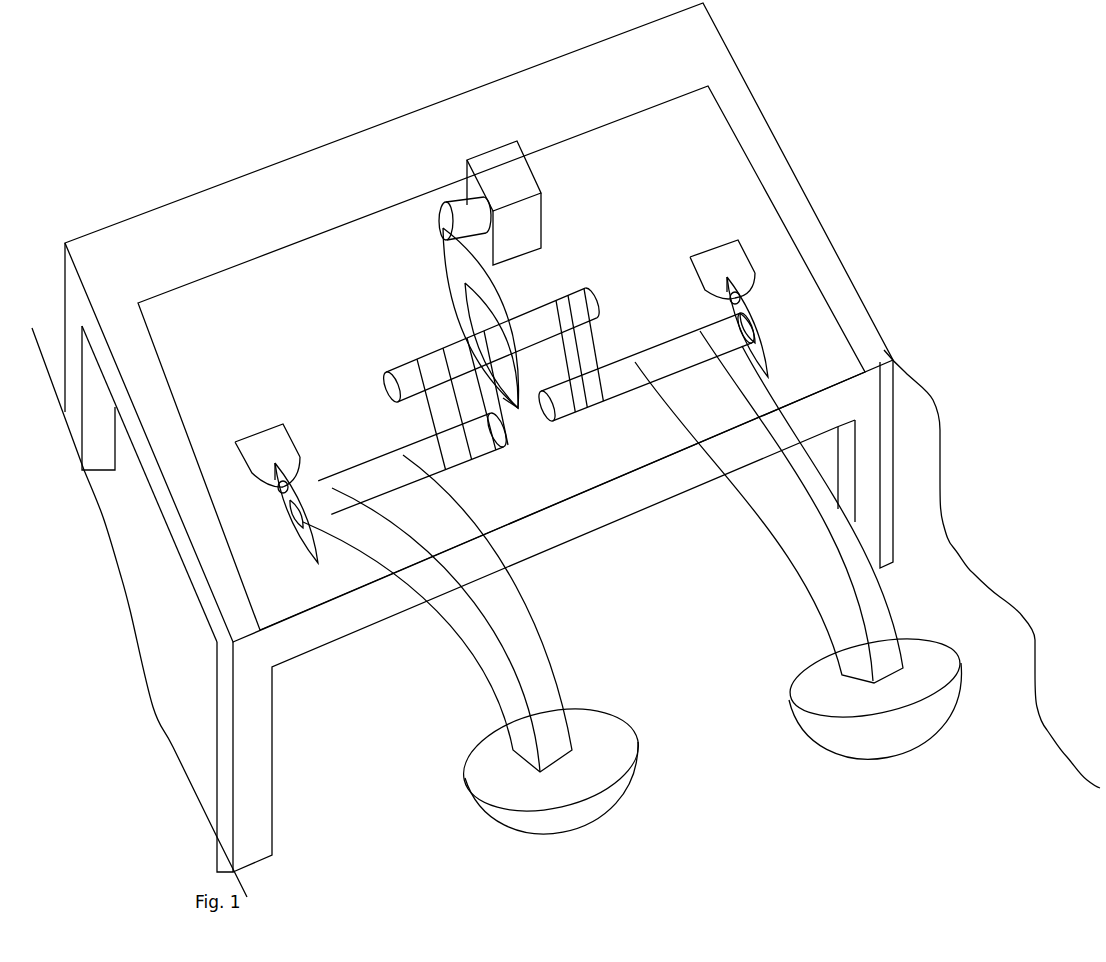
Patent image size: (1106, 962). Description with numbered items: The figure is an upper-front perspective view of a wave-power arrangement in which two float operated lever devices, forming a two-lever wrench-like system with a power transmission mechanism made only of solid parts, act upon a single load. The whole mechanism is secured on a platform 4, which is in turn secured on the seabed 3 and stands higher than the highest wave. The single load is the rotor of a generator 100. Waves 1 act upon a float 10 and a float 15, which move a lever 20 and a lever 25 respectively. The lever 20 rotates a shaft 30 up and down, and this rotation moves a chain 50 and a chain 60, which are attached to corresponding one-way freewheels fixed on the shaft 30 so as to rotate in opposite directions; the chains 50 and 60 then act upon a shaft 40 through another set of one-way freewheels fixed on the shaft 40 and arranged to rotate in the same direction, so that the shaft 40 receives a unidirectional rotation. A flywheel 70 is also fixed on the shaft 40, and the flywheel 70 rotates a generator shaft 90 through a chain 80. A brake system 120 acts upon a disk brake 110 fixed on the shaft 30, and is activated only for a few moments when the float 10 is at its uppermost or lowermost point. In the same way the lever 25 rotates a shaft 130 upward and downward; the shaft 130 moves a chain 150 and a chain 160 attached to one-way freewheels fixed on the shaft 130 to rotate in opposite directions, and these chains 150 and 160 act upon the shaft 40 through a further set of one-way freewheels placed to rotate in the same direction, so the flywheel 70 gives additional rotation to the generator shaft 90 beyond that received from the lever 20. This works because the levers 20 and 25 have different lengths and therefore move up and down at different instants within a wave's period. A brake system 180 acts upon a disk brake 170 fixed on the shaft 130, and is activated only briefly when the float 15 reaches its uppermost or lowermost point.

The waves 1 is at (1100, 790).
The seabed 3 is at (168, 743).
The platform 4 is at (197, 243).
The float 10 is at (833, 755).
The float 15 is at (548, 835).
The lever 20 is at (781, 538).
The lever 25 is at (474, 648).
The shaft 30 is at (646, 346).
The shaft 40 is at (590, 297).
The chain 50 is at (586, 346).
The chain 60 is at (545, 348).
The flywheel 70 is at (503, 398).
The chain 80 is at (453, 253).
The generator shaft 90 is at (443, 209).
The generator 100 is at (480, 158).
The disk brake 110 is at (734, 302).
The brake system 120 is at (762, 332).
The shaft 130 is at (377, 447).
The chain 150 is at (424, 406).
The chain 160 is at (456, 384).
The disk brake 170 is at (300, 549).
The brake system 180 is at (278, 490).